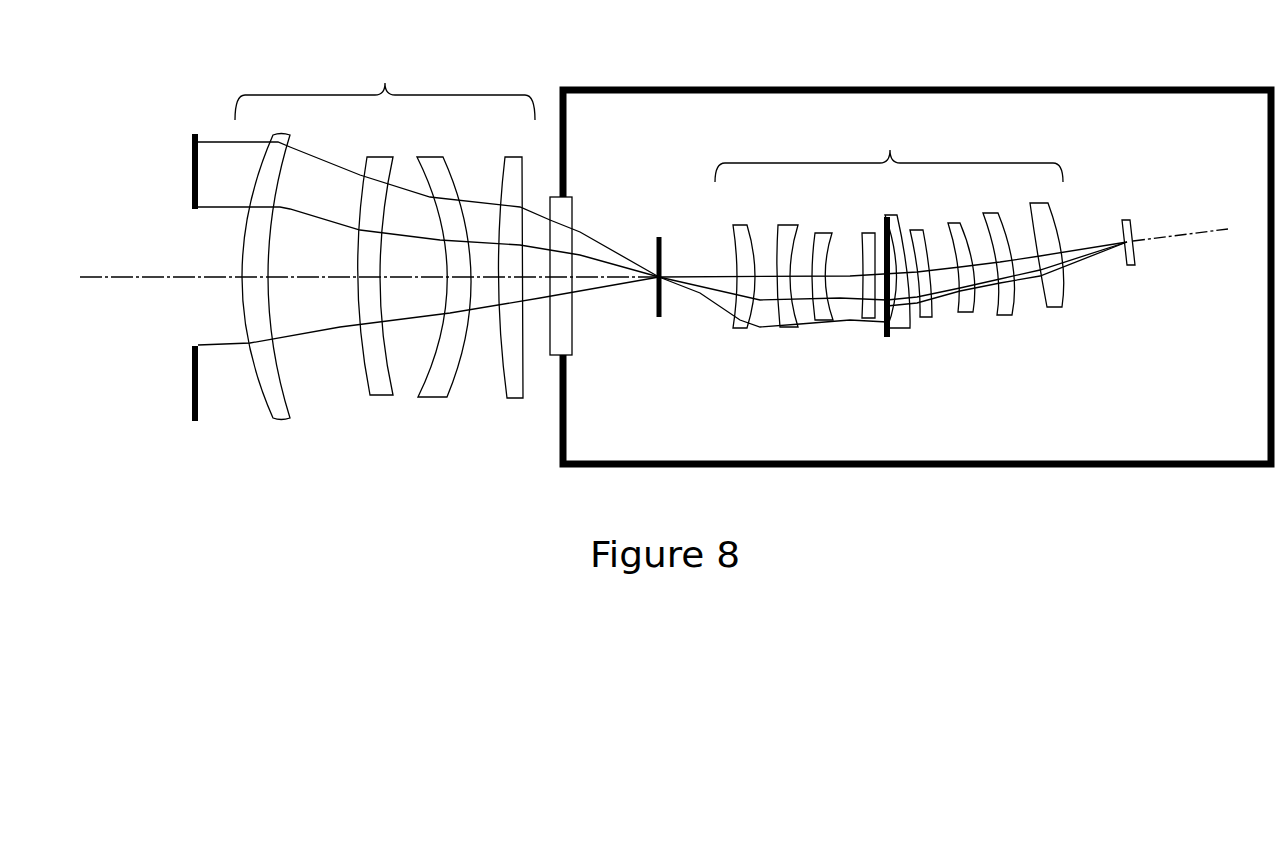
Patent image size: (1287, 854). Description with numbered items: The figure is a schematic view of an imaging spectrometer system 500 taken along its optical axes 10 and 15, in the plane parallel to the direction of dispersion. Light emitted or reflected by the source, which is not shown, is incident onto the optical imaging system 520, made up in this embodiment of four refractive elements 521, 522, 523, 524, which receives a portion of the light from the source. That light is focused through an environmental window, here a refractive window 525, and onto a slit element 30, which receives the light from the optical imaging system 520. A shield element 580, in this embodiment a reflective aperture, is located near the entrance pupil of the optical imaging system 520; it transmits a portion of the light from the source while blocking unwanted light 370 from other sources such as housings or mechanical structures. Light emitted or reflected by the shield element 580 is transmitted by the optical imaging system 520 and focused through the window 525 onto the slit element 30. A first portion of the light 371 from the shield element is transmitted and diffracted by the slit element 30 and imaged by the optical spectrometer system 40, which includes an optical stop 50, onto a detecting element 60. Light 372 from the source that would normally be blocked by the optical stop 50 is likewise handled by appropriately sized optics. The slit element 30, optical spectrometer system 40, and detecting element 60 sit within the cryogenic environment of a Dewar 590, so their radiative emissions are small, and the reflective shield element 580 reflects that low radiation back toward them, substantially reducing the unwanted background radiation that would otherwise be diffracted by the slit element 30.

The imaging spectrometer system 500 is at (160, 86).
The optical imaging system 520 is at (385, 79).
The Dewar 590 is at (698, 86).
The optical spectrometer system 40 is at (890, 156).
The detecting element 60 is at (1137, 233).
The unwanted light 370 is at (217, 185).
The slit element 30 is at (653, 258).
The optical axis 10 is at (128, 282).
The refractive window 525 is at (571, 352).
The second portion of the light 372 is at (710, 303).
The first portion of the light 371 is at (1072, 262).
The optical axis 15 is at (1183, 238).
The optical stop 50 is at (887, 338).
The shield element 580 is at (198, 400).
The refractive element 521 is at (283, 422).
The refractive element 522 is at (380, 398).
The refractive element 523 is at (425, 398).
The refractive element 524 is at (508, 398).